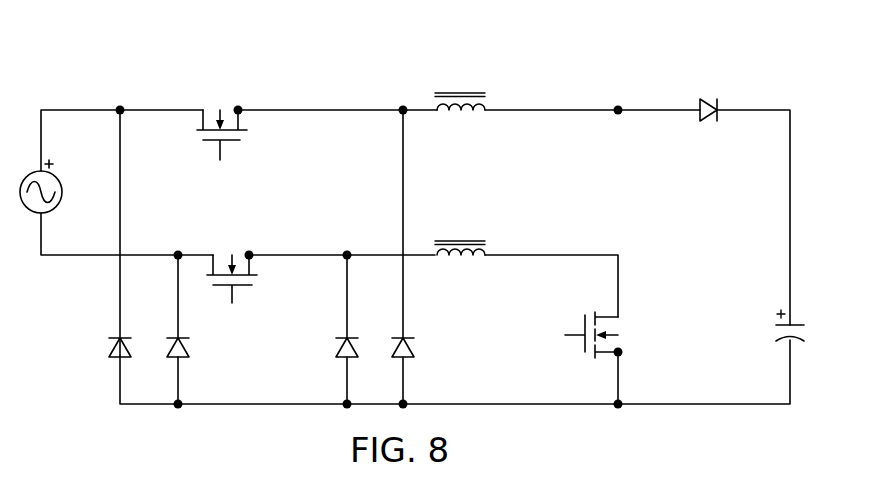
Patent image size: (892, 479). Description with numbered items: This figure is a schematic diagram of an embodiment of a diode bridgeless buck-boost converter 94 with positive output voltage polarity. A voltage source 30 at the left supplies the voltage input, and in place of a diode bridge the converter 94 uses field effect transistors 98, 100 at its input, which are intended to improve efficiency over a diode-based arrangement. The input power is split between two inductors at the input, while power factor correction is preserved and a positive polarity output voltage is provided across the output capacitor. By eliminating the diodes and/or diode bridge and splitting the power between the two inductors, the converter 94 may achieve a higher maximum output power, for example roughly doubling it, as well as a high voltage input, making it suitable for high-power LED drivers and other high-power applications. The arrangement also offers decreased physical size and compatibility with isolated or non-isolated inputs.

The voltage source 30 is at (63, 185).
The diode bridgeless buck-boost converter 94 is at (756, 60).
The field effect transistor 98 is at (260, 135).
The field effect transistor 100 is at (265, 286).